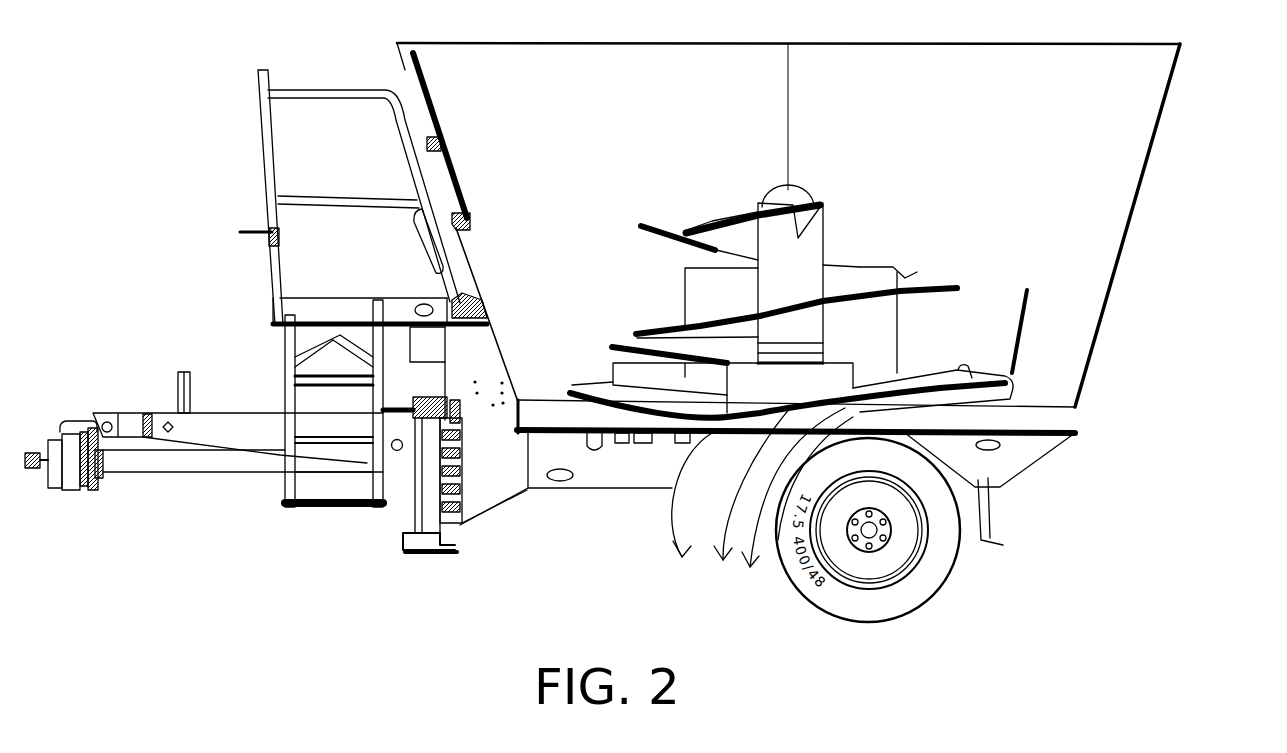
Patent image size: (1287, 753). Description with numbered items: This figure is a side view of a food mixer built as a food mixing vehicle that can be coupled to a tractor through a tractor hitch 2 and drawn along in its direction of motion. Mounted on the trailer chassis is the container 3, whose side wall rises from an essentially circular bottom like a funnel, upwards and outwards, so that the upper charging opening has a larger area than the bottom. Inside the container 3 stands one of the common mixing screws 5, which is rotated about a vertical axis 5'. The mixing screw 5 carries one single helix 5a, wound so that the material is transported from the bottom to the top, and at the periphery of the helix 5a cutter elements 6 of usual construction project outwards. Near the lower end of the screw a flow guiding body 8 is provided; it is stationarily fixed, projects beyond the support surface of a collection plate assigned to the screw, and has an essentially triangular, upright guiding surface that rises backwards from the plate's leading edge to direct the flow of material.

The tractor hitch 2 is at (90, 490).
The container 3 is at (1157, 148).
The mixing screw 5 is at (787, 285).
The vertical axis 5' is at (787, 170).
The helix 5a is at (910, 278).
The cutter elements 6 is at (642, 223).
The flow guiding body 8 is at (960, 367).